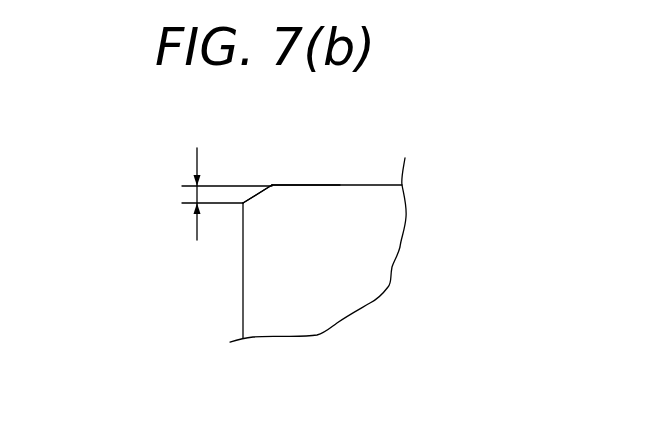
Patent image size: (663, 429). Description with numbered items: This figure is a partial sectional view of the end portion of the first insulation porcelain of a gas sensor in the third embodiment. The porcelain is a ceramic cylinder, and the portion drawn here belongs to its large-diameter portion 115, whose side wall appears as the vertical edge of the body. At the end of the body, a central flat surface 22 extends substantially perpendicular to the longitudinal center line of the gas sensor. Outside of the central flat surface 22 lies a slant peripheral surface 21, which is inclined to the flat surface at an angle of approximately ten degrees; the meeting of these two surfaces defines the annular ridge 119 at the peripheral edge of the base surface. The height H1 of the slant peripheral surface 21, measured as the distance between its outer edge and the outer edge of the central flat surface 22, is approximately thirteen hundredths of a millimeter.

The large-diameter portion 115 is at (270, 277).
The slant peripheral surface 21 is at (256, 188).
The central flat surface 22 is at (340, 185).
The annular ridge 119 is at (295, 208).
The height H1 is at (195, 193).